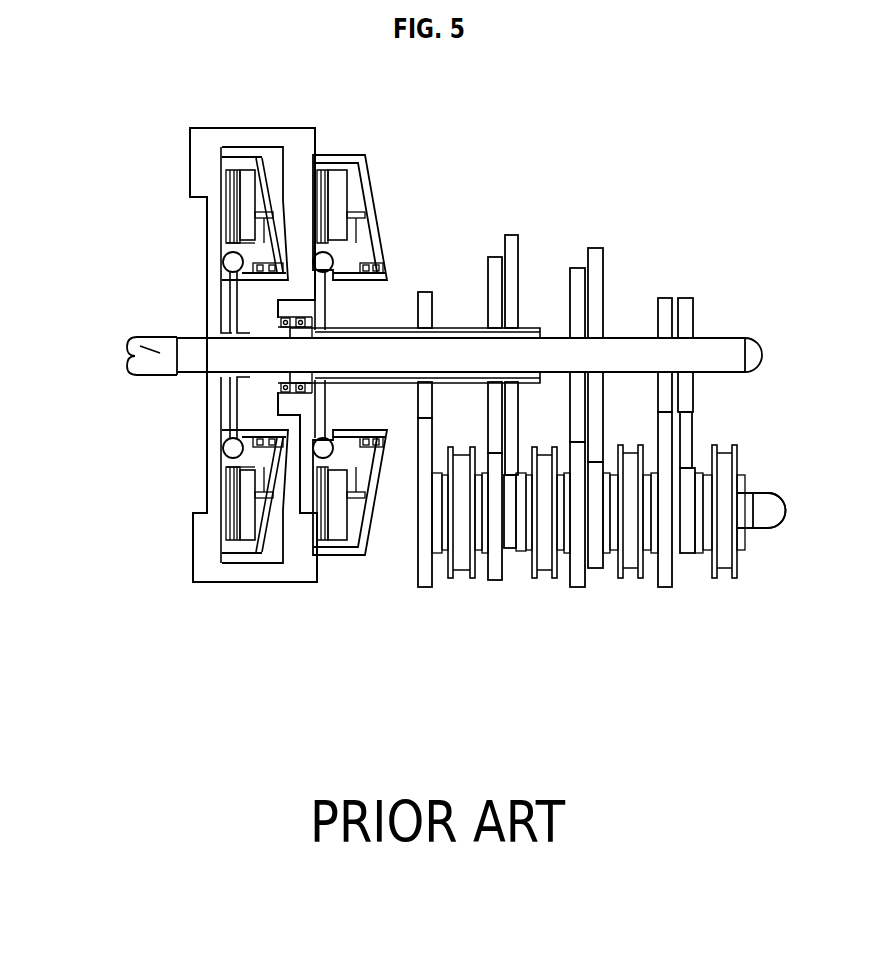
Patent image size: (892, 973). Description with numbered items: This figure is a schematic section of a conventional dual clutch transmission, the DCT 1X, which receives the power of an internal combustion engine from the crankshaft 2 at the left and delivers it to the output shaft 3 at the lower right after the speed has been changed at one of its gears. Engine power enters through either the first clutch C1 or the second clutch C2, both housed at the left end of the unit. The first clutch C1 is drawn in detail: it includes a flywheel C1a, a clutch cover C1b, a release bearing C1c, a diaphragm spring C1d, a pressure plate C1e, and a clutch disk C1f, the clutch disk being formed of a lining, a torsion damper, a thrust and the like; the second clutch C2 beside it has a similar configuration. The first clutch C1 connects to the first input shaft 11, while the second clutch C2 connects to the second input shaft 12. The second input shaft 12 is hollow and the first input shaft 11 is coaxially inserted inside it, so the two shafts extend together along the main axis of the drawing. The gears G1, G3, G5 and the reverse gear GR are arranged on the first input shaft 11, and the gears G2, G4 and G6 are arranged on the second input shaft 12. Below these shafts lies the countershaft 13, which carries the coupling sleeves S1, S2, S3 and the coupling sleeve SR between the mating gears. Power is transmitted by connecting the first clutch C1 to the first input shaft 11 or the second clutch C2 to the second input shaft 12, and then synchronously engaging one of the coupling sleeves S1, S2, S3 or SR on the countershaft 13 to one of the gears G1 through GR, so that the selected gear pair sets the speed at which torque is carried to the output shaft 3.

The DCT 1X is at (712, 160).
The crankshaft 2 is at (158, 350).
The output shaft 3 is at (768, 517).
The first input shaft 11 is at (727, 335).
The second input shaft 12 is at (462, 327).
The countershaft 13 is at (438, 520).
The first clutch C1 is at (252, 167).
The flywheel C1a is at (208, 162).
The clutch cover C1b is at (281, 203).
The release bearing C1c is at (243, 275).
The diaphragm spring C1d is at (230, 260).
The pressure plate C1e is at (235, 188).
The clutch disk C1f is at (223, 220).
The second clutch C2 is at (378, 132).
The gear G1 is at (663, 297).
The gear G2 is at (422, 307).
The gear G3 is at (575, 290).
The gear G4 is at (493, 283).
The gear G5 is at (592, 253).
The gear G6 is at (512, 237).
The gear GR is at (687, 298).
The coupling sleeve S1 is at (630, 530).
The coupling sleeve S2 is at (462, 527).
The coupling sleeve S3 is at (545, 527).
The coupling sleeve SR is at (723, 530).